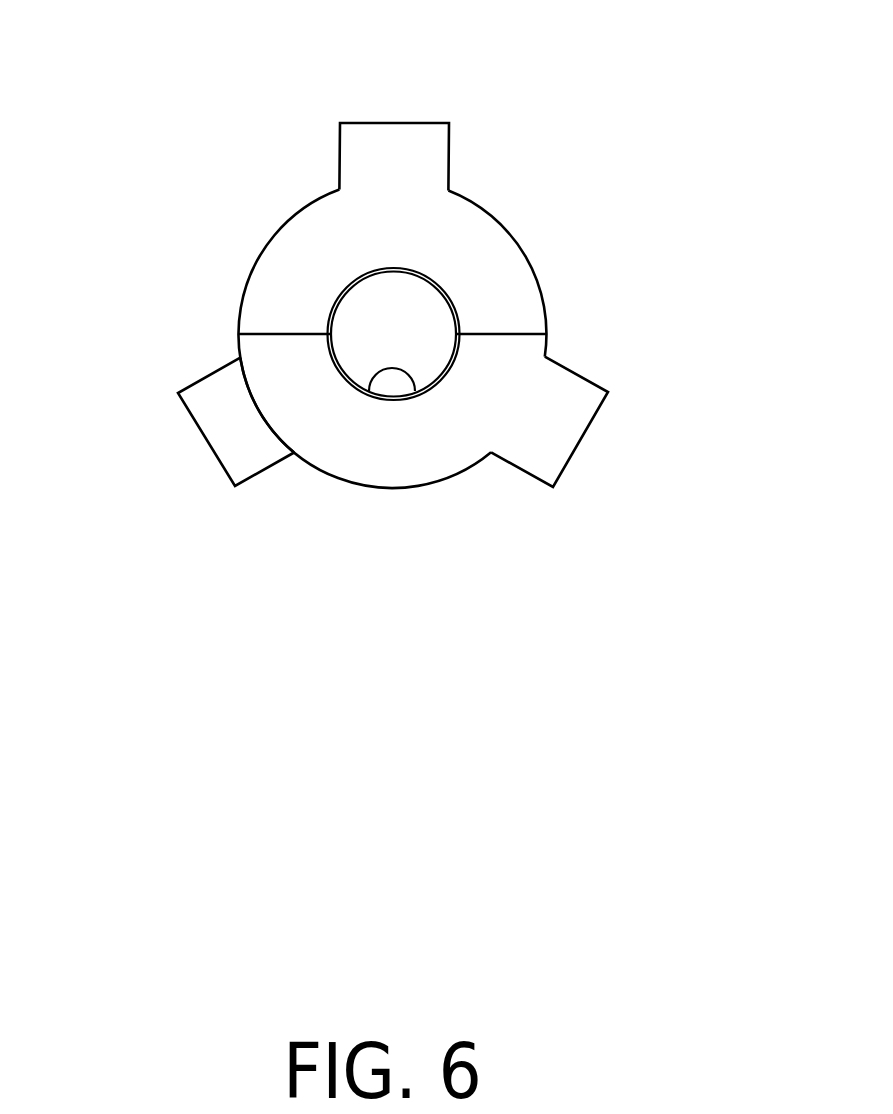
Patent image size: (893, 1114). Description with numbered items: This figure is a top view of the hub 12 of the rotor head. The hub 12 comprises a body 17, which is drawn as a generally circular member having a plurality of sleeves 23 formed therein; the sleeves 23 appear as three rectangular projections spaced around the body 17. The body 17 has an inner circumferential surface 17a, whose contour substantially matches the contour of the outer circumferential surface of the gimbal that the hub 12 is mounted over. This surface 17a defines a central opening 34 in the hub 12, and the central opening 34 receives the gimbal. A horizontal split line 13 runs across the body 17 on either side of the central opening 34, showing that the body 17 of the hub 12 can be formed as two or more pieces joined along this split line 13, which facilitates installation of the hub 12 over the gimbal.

The hub 12 is at (538, 116).
The split line 13 is at (285, 333).
The body 17 is at (518, 245).
The inner circumferential surface 17a is at (360, 385).
The sleeves 23 is at (377, 121).
The central opening 34 is at (375, 302).